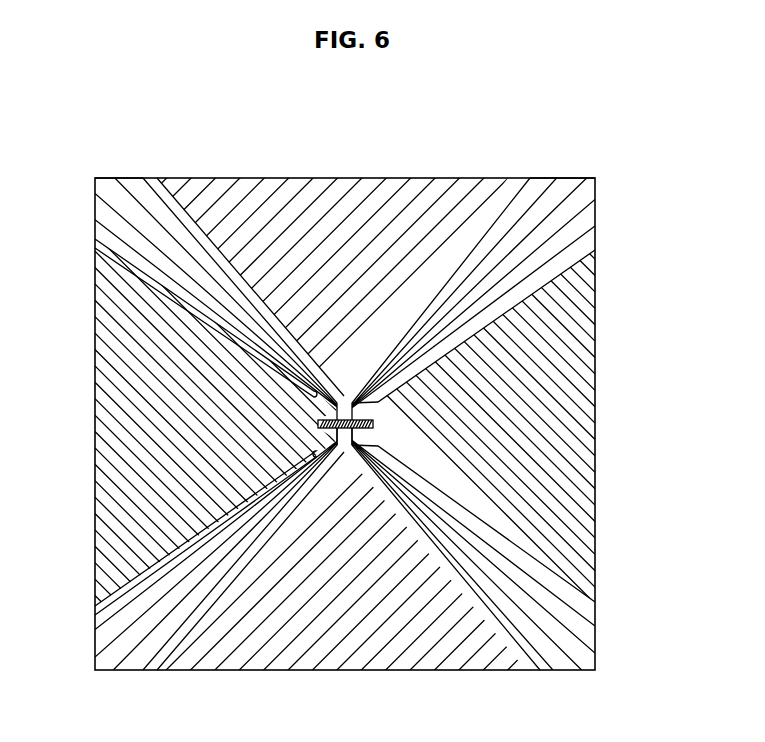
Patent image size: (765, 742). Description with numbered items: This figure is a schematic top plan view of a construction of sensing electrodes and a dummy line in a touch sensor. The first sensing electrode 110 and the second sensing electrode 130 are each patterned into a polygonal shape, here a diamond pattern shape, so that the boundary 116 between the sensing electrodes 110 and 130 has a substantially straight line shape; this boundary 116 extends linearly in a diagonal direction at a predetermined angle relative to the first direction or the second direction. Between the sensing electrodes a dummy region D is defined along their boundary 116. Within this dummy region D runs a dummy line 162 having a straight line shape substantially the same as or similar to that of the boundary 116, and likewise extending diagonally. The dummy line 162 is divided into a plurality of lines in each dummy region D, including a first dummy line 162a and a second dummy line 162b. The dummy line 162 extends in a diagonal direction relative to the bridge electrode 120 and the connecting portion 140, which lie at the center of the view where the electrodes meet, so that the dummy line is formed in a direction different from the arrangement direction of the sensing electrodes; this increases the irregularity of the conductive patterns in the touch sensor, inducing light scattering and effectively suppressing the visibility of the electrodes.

The first sensing electrode 110 is at (100, 441).
The boundary 116 is at (114, 267).
The bridge electrode 120 is at (373, 423).
The second sensing electrode 130 is at (319, 192).
The connecting portion 140 is at (349, 432).
The dummy line 162 is at (547, 113).
The first dummy line 162a is at (568, 190).
The second dummy line 162b is at (586, 232).
The dummy region D is at (122, 208).